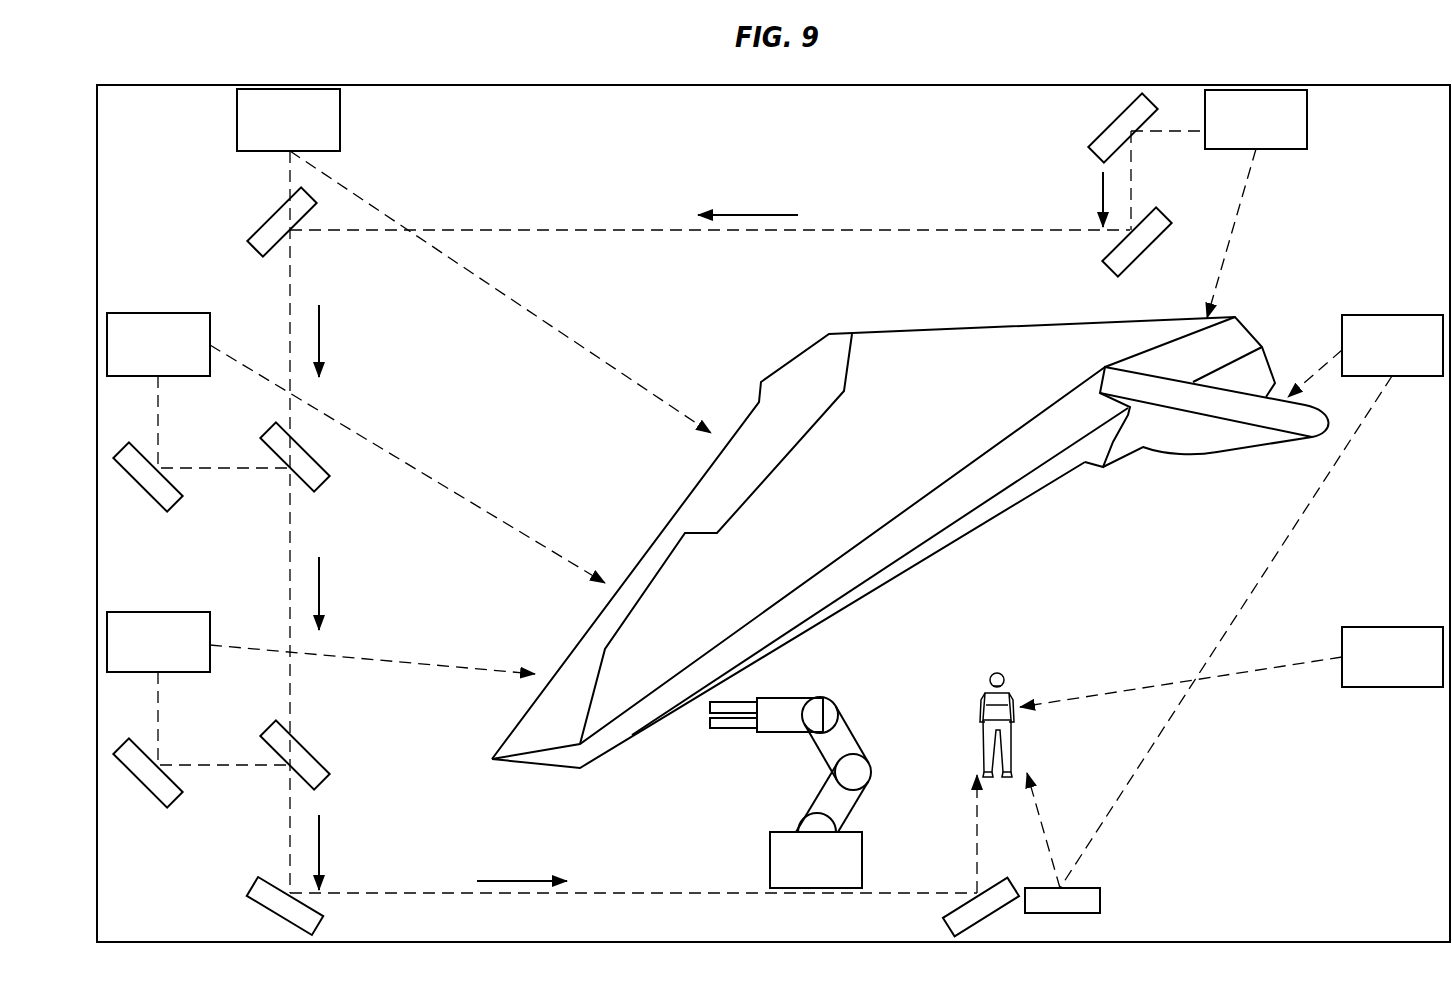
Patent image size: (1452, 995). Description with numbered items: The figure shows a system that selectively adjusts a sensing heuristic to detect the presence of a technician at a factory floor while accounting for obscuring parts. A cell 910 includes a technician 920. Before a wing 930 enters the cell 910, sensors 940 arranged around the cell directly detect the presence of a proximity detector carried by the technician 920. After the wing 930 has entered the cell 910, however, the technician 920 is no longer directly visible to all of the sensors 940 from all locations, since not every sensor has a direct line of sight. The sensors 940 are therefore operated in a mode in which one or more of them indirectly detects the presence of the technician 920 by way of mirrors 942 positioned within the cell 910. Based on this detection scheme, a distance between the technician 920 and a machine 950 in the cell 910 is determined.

The cell 910 is at (978, 85).
The technician 920 is at (1003, 686).
The wing 930 is at (942, 548).
The sensors 940 is at (775, 388).
The mirrors 942 is at (642, 514).
The machine 950 is at (827, 697).